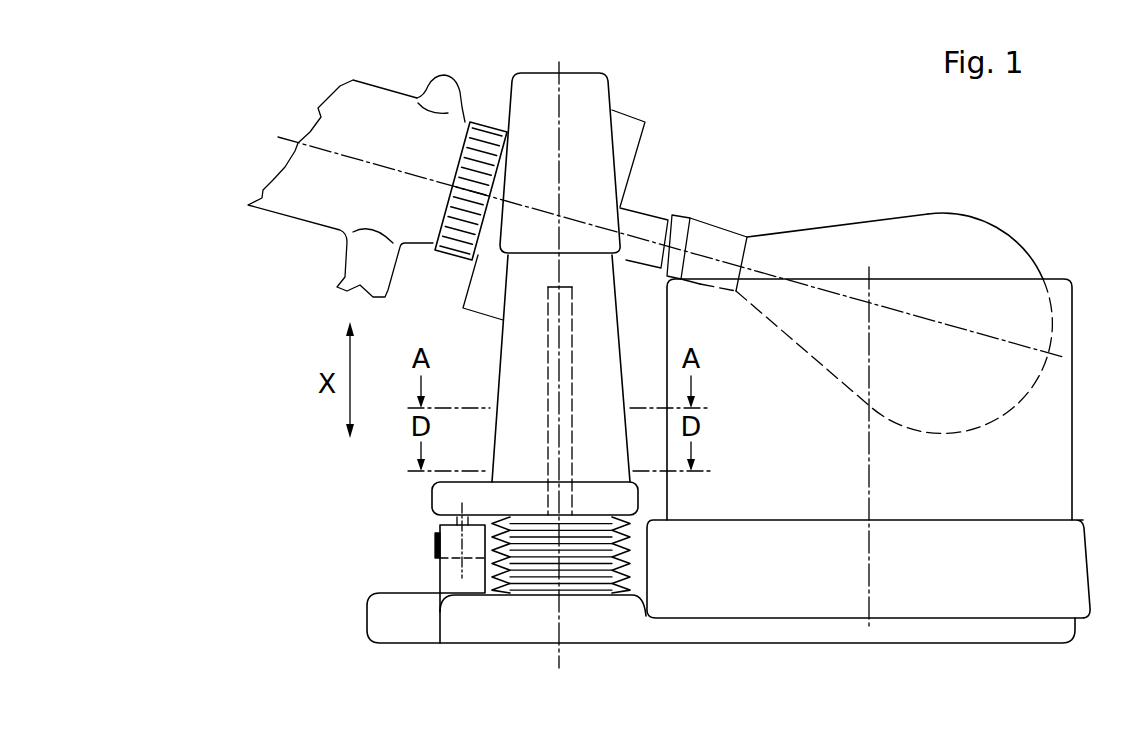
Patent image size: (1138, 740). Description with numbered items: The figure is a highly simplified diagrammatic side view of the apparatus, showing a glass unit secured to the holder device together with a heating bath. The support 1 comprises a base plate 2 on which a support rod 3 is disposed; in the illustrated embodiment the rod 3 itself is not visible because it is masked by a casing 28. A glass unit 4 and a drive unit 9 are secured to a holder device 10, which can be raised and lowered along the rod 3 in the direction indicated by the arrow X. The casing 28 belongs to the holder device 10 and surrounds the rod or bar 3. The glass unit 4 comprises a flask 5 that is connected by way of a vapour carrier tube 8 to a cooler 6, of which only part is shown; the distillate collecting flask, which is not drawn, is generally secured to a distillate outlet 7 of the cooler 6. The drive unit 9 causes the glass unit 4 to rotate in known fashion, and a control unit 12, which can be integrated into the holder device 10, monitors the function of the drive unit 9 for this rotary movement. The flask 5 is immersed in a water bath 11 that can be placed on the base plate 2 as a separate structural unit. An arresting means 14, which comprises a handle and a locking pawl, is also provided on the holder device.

The support 1 is at (296, 353).
The base plate 2 is at (387, 614).
The support rod 3 is at (555, 379).
The glass unit 4 is at (710, 202).
The flask 5 is at (963, 237).
The cooler 6 is at (287, 198).
The distillate outlet 7 is at (362, 261).
The vapour carrier tube 8 is at (628, 223).
The drive unit 9 is at (625, 126).
The holder device 10 is at (664, 131).
The water bath 11 is at (1051, 437).
The control unit 12 is at (523, 94).
The arresting means 14 is at (452, 502).
The casing 28 is at (523, 330).